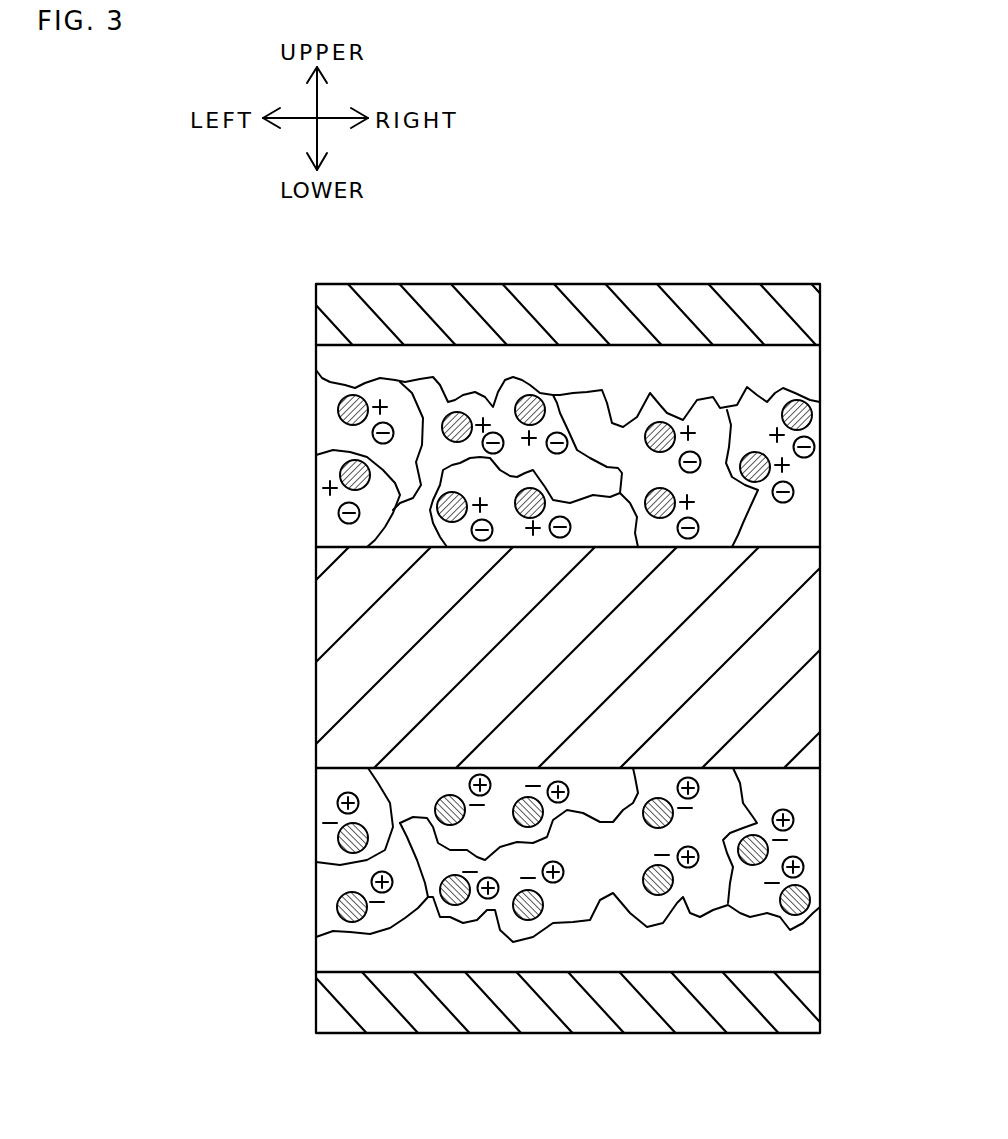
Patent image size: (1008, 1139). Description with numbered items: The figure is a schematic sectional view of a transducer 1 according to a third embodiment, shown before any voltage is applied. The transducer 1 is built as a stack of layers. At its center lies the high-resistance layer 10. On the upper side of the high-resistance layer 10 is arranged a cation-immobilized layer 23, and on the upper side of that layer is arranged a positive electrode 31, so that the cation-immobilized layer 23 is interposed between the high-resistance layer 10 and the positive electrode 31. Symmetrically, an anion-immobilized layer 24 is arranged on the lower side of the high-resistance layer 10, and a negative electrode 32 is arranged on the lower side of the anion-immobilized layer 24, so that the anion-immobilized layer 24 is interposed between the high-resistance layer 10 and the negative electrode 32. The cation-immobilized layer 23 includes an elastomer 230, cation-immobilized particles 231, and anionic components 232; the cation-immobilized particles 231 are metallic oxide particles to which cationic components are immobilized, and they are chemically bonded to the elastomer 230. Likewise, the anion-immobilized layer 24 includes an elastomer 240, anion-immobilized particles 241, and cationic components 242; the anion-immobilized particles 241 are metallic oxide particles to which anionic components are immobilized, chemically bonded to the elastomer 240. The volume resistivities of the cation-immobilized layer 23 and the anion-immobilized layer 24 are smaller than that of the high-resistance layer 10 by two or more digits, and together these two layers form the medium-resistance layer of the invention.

The transducer 1 is at (750, 190).
The high-resistance layer 10 is at (805, 607).
The cation-immobilized layer 23 is at (563, 448).
The anion-immobilized layer 24 is at (559, 868).
The positive electrode 31 is at (775, 293).
The negative electrode 32 is at (790, 1017).
The elastomer 230 is at (316, 370).
The cation-immobilized particles 231 is at (340, 415).
The anionic components 232 is at (338, 511).
The elastomer 240 is at (333, 937).
The anion-immobilized particles 241 is at (338, 906).
The cationic components 242 is at (338, 800).